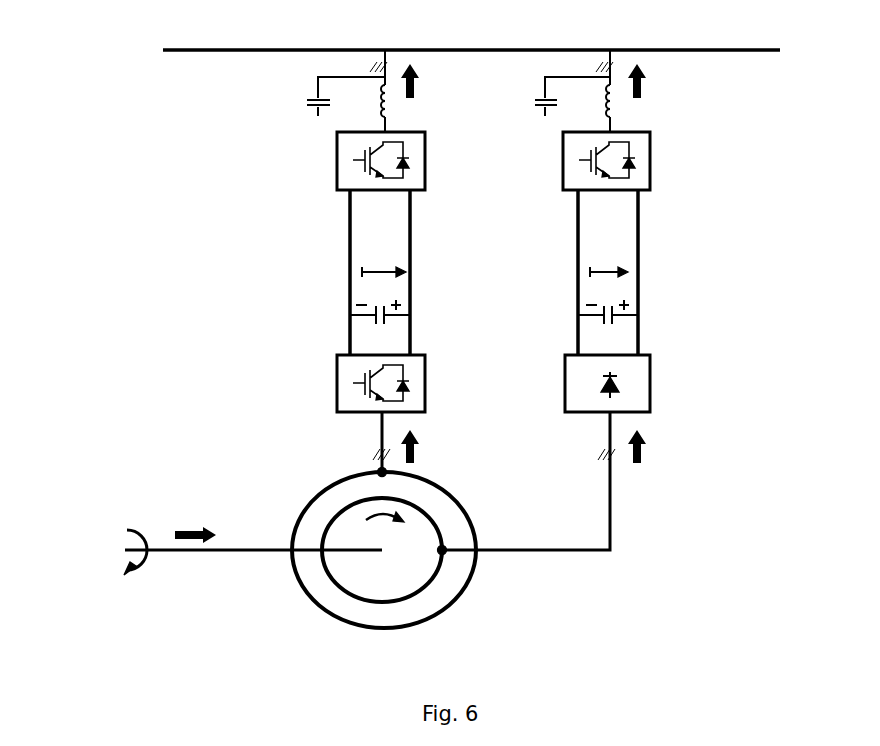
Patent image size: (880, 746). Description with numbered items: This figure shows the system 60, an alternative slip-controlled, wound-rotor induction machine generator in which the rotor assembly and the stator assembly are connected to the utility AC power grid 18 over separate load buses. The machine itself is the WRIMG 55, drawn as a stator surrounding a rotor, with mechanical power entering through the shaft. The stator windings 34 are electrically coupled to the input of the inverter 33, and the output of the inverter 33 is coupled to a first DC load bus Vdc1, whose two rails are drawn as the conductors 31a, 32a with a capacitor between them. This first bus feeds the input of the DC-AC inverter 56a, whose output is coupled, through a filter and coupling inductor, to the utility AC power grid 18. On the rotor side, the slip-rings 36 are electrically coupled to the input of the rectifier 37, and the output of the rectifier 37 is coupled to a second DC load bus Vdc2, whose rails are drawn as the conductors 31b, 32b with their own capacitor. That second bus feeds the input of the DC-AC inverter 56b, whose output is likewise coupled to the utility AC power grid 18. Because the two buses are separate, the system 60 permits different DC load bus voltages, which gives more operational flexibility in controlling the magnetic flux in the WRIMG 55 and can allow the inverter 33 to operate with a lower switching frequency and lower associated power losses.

The utility AC power grid 18 is at (195, 46).
The system 60 is at (158, 296).
The DC-AC inverter 56a is at (332, 170).
The DC-AC inverter 56b is at (652, 164).
The DC bus rail 31a is at (350, 250).
The DC bus rail 32a is at (410, 256).
The DC bus rail 31b is at (578, 227).
The DC bus rail 32b is at (638, 233).
The inverter 33 is at (337, 370).
The rectifier 37 is at (652, 370).
The stator windings 34 is at (380, 470).
The slip-rings 36 is at (443, 548).
The WRIMG 55 is at (226, 603).